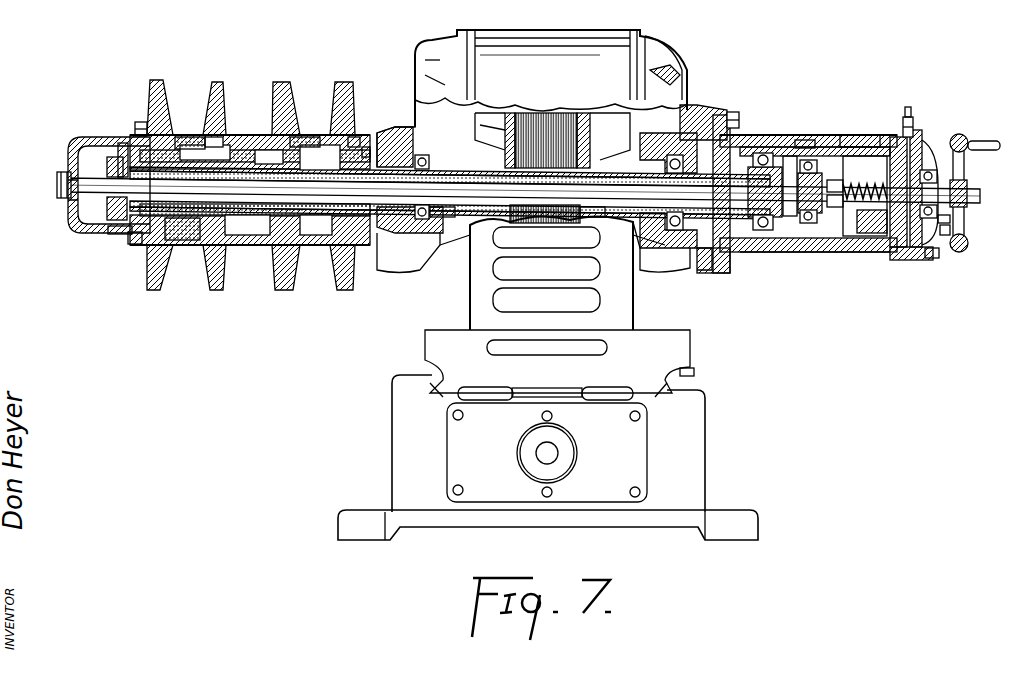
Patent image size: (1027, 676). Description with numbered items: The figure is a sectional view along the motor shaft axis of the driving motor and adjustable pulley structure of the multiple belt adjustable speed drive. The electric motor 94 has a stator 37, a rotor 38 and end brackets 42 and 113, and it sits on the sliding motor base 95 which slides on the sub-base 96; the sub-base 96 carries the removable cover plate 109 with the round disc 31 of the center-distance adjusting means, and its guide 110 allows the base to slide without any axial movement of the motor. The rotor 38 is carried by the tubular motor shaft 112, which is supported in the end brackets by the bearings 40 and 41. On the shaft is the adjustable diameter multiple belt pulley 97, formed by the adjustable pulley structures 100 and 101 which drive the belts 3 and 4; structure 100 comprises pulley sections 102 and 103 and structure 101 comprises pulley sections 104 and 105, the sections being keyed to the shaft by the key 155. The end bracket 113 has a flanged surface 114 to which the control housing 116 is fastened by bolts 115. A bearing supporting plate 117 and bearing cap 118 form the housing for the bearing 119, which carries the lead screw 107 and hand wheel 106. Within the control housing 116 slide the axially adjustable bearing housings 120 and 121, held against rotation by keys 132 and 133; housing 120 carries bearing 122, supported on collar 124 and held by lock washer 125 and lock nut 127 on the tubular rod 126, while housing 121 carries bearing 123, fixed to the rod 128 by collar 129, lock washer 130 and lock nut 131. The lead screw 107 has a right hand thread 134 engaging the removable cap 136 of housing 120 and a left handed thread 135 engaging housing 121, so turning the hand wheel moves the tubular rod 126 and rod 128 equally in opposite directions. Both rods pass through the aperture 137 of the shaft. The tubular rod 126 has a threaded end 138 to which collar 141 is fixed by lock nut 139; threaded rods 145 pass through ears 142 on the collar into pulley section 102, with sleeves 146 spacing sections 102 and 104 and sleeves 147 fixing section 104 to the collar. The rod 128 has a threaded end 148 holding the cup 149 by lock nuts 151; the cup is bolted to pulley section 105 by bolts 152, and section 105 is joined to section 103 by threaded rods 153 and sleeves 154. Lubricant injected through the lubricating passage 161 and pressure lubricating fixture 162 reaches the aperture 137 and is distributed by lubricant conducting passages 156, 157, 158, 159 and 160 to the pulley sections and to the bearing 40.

The belt 3 is at (313, 137).
The belt 4 is at (183, 135).
The round disc 31 is at (517, 453).
The stator 37 is at (585, 30).
The rotor 38 is at (578, 165).
The bearing 40 is at (405, 128).
The bearing 41 is at (665, 202).
The end bracket 42 is at (422, 60).
The electric motor 94 is at (595, 93).
The sliding motor base 95 is at (690, 352).
The sub-base 96 is at (706, 456).
The adjustable diameter multiple belt pulley 97 is at (260, 322).
The adjustable pulley structure 100 is at (279, 80).
The adjustable pulley structure 101 is at (153, 84).
The pulley section 102 is at (340, 292).
The pulley section 103 is at (285, 292).
The pulley section 104 is at (213, 292).
The pulley section 105 is at (150, 292).
The hand wheel 106 is at (962, 250).
The lead screw 107 is at (967, 195).
The removable cover plate 109 is at (648, 455).
The guide 110 is at (440, 395).
The tubular motor shaft 112 is at (500, 170).
The end bracket 113 is at (678, 58).
The flanged surface 114 is at (732, 272).
The bolts 115 is at (737, 112).
The control housing 116 is at (752, 133).
The bearing supporting plate 117 is at (915, 135).
The bearing cap 118 is at (948, 230).
The bearing 119 is at (928, 165).
The axially adjustable bearing housing 120 is at (772, 136).
The axially adjustable bearing housing 121 is at (818, 140).
The bearing 122 is at (808, 252).
The bearing 123 is at (830, 252).
The collar 124 is at (748, 178).
The lock washer 125 is at (775, 240).
The tubular rod 126 is at (696, 259).
The lock nut 127 is at (795, 250).
The rod 128 is at (606, 216).
The collar 129 is at (815, 254).
The lock washer 130 is at (838, 178).
The lock nut 131 is at (838, 207).
The key 132 is at (805, 140).
The key 133 is at (855, 136).
The right hand thread 134 is at (874, 220).
The left handed thread 135 is at (865, 184).
The removable cap 136 is at (893, 262).
The aperture 137 is at (457, 216).
The threaded end 138 is at (104, 164).
The lock nut 139 is at (106, 209).
The collar 141 is at (72, 140).
The ears 142 is at (112, 236).
The threaded rods 145 is at (330, 240).
The sleeves 146 is at (262, 238).
The sleeves 147 is at (130, 244).
The threaded end 148 is at (57, 185).
The cup 149 is at (70, 216).
The lock nuts 151 is at (60, 178).
The bolts 152 is at (140, 123).
The threaded rods 153 is at (268, 148).
The sleeves 154 is at (222, 130).
The key 155 is at (186, 243).
The lubricant conducting passage 156 is at (123, 143).
The lubricant conducting passage 157 is at (228, 145).
The lubricant conducting passage 158 is at (320, 157).
The lubricant conducting passage 159 is at (364, 128).
The lubricant conducting passage 160 is at (370, 141).
The lubricating passage 161 is at (907, 117).
The pressure lubricating fixture 162 is at (910, 108).